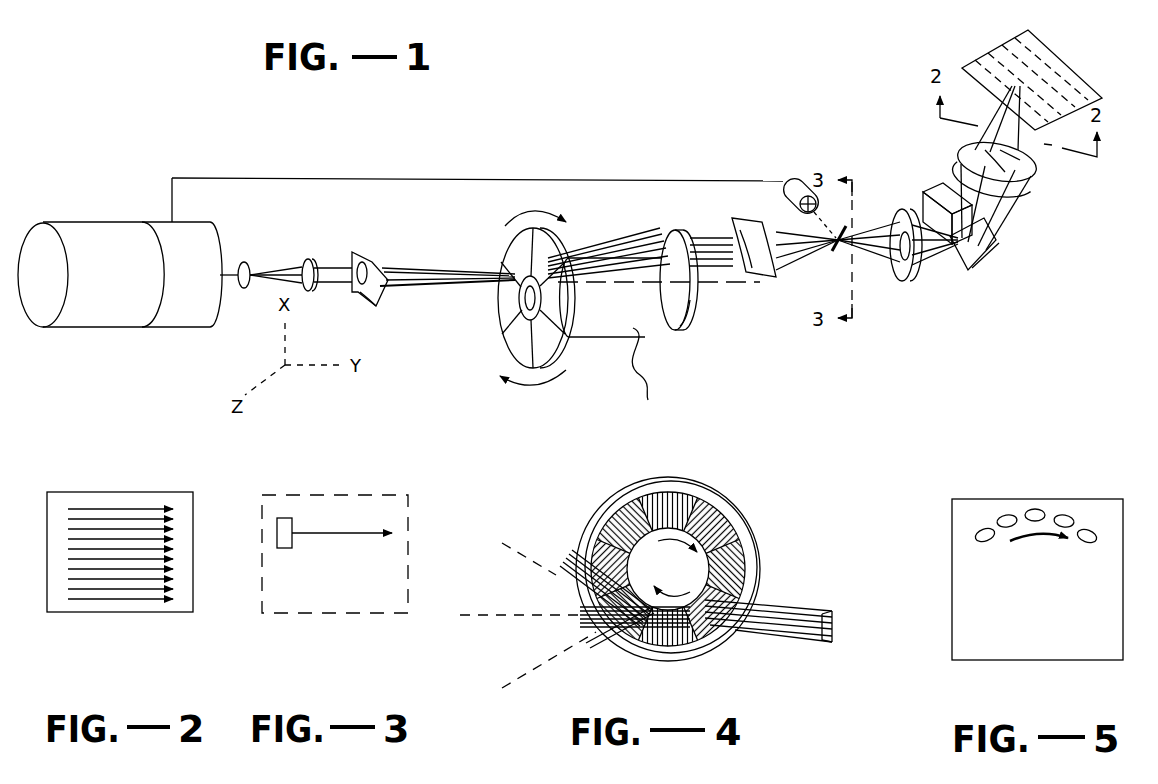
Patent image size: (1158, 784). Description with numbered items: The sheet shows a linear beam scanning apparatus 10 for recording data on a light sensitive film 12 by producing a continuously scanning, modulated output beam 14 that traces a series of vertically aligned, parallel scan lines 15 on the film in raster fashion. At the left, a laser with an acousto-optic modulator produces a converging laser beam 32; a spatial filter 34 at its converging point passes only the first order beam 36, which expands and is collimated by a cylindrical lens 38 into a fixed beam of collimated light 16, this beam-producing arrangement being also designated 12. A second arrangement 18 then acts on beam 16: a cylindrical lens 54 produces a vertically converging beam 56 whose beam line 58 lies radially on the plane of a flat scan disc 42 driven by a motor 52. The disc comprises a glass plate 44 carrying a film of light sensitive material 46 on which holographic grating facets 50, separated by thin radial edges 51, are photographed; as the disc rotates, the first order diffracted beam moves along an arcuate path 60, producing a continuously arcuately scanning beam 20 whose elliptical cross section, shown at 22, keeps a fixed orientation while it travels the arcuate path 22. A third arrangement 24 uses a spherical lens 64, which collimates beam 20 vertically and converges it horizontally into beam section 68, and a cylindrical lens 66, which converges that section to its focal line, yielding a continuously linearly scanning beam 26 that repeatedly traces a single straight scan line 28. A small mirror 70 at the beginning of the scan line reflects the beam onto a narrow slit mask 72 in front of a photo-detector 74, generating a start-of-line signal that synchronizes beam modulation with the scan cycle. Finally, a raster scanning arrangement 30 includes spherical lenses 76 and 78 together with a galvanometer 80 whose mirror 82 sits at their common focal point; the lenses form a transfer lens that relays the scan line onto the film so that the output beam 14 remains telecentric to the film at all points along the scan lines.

In FIG. 1, the linear beam scanning apparatus 10 is at (567, 106).
In FIG. 1, the light sensitive film 12 is at (106, 332).
In FIG. 2, the light sensitive film 12 is at (193, 505).
In FIG. 1, the output beam of light 14 is at (976, 129).
In FIG. 2, the parallel scan lines 15 is at (112, 508).
In FIG. 1, the fixed beam of collimated light 16 is at (355, 255).
In FIG. 1, the arrangement for producing arcuately scanning beam 18 is at (609, 393).
In FIG. 1, the continuously arcuately scanning beam of light 20 is at (637, 245).
In FIG. 1, the arcuate path 22 is at (672, 235).
In FIG. 5, the arcuate path 22 is at (1039, 557).
In FIG. 1, the arrangement for producing linearly scanning beam 24 is at (778, 313).
In FIG. 1, the continuously linearly scanning beam of light 26 is at (806, 260).
In FIG. 3, the scan line 28 is at (345, 533).
In FIG. 1, the raster scanning arrangement 30 is at (998, 263).
In FIG. 1, the laser beam 32 is at (228, 279).
In FIG. 1, the spatial filter 34 is at (246, 262).
In FIG. 1, the first order beam 36 is at (287, 270).
In FIG. 1, the cylindrical lens 38 is at (307, 262).
In FIG. 1, the flat scan disc 42 is at (491, 338).
In FIG. 4, the flat scan disc 42 is at (749, 498).
In FIG. 4, the glass plate 44 is at (594, 530).
In FIG. 4, the light sensitive material 46 is at (613, 508).
In FIG. 4, the facets 50 is at (686, 500).
In FIG. 4, the radial edges 51 is at (660, 495).
In FIG. 1, the motor 52 is at (612, 338).
In FIG. 1, the cylindrical lens 54 is at (382, 291).
In FIG. 1, the converging beam 56 is at (490, 271).
In FIG. 4, the converging beam 56 is at (782, 610).
In FIG. 1, the beam line 58 is at (516, 270).
In FIG. 4, the beam line 58 is at (629, 641).
In FIG. 5, the arcuate path 60 is at (1072, 568).
In FIG. 1, the spherical lens 64 is at (687, 325).
In FIG. 1, the cylindrical lens 66 is at (747, 233).
In FIG. 1, the beam section 68 is at (742, 238).
In FIG. 1, the mirror 70 is at (846, 232).
In FIG. 3, the mirror 70 is at (280, 548).
In FIG. 1, the slit mask 72 is at (806, 195).
In FIG. 1, the photo-detector 74 is at (787, 179).
In FIG. 1, the spherical lens 76 is at (903, 278).
In FIG. 1, the spherical lens 78 is at (1035, 173).
In FIG. 1, the galvanometer 80 is at (940, 190).
In FIG. 1, the mirror 82 is at (1000, 244).